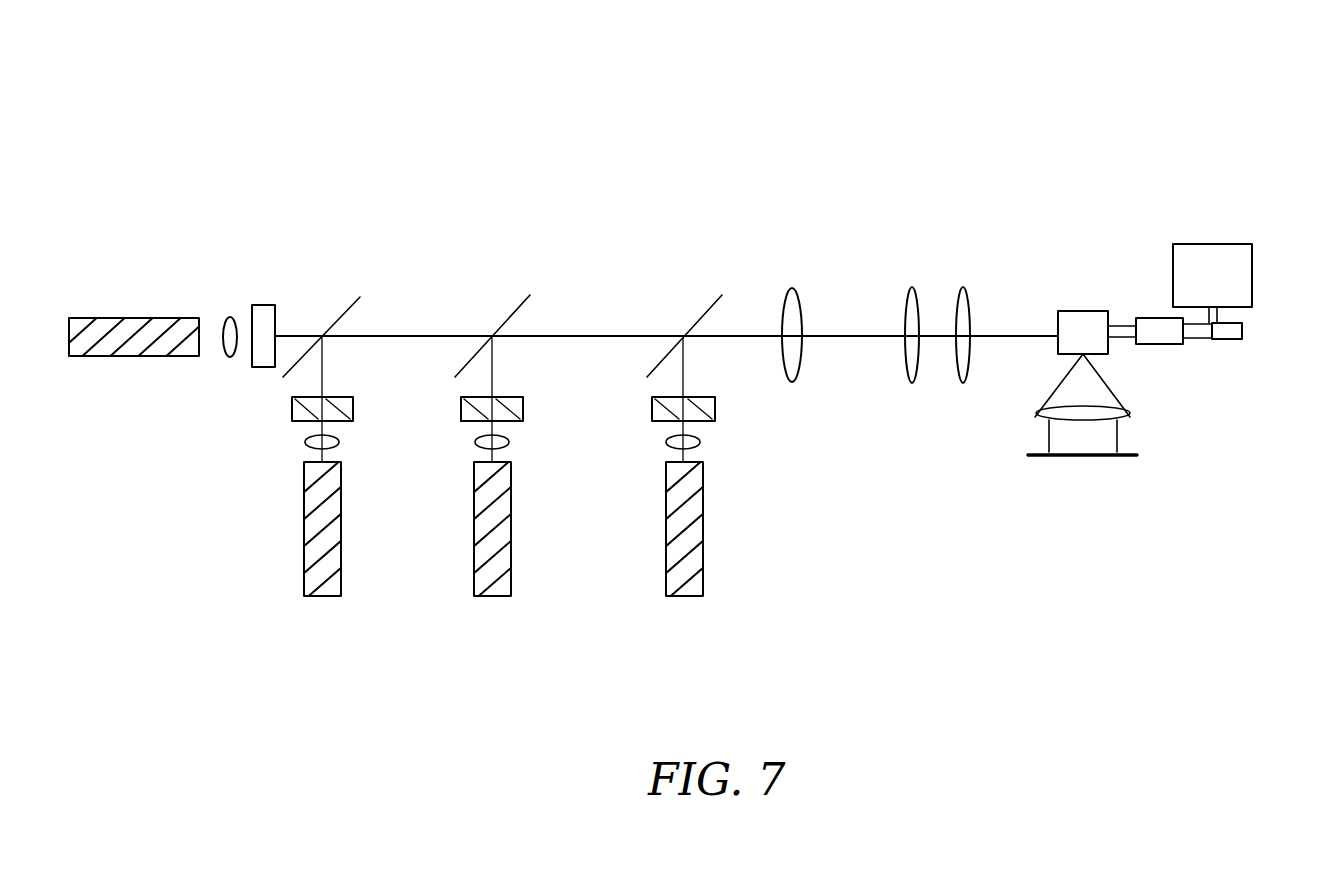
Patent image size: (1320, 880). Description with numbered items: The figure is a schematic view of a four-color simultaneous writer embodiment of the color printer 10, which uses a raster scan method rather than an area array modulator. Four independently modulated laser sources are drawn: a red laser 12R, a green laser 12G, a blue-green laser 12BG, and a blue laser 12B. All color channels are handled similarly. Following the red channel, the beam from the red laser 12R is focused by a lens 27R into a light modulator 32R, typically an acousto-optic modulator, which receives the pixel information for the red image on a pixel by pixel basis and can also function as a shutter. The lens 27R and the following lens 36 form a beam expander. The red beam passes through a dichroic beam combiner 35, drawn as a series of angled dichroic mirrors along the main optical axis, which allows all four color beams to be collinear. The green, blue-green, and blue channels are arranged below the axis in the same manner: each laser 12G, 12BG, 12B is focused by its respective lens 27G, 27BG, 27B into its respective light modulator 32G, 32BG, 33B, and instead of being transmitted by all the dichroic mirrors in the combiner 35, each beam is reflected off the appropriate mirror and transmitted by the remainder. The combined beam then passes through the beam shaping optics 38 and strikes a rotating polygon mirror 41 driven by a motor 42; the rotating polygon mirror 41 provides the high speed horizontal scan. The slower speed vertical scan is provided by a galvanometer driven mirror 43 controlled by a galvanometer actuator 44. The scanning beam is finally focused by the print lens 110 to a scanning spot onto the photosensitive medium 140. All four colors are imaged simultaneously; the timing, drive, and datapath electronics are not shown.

The color printer 10 is at (968, 143).
The red laser 12R is at (136, 318).
The lens 27R is at (230, 358).
The light modulator 32R is at (265, 305).
The dichroic beam combiner 35 is at (718, 268).
The lens 36 is at (790, 298).
The beam shaping optics 38 is at (978, 288).
The galvanometer actuator 44 is at (1080, 311).
The motor 42 is at (1210, 244).
The galvanometer driven mirror 43 is at (1160, 344).
The rotating polygon mirror 41 is at (1242, 332).
The print lens 110 is at (1128, 414).
The photosensitive medium 140 is at (1137, 455).
The light modulator 32G is at (292, 407).
The lens 27G is at (333, 442).
The green laser 12G is at (310, 580).
The light modulator 32BG is at (523, 408).
The lens 27BG is at (503, 442).
The blue-green laser 12BG is at (480, 578).
The light modulator 33B is at (715, 408).
The lens 27B is at (696, 442).
The blue laser 12B is at (674, 576).